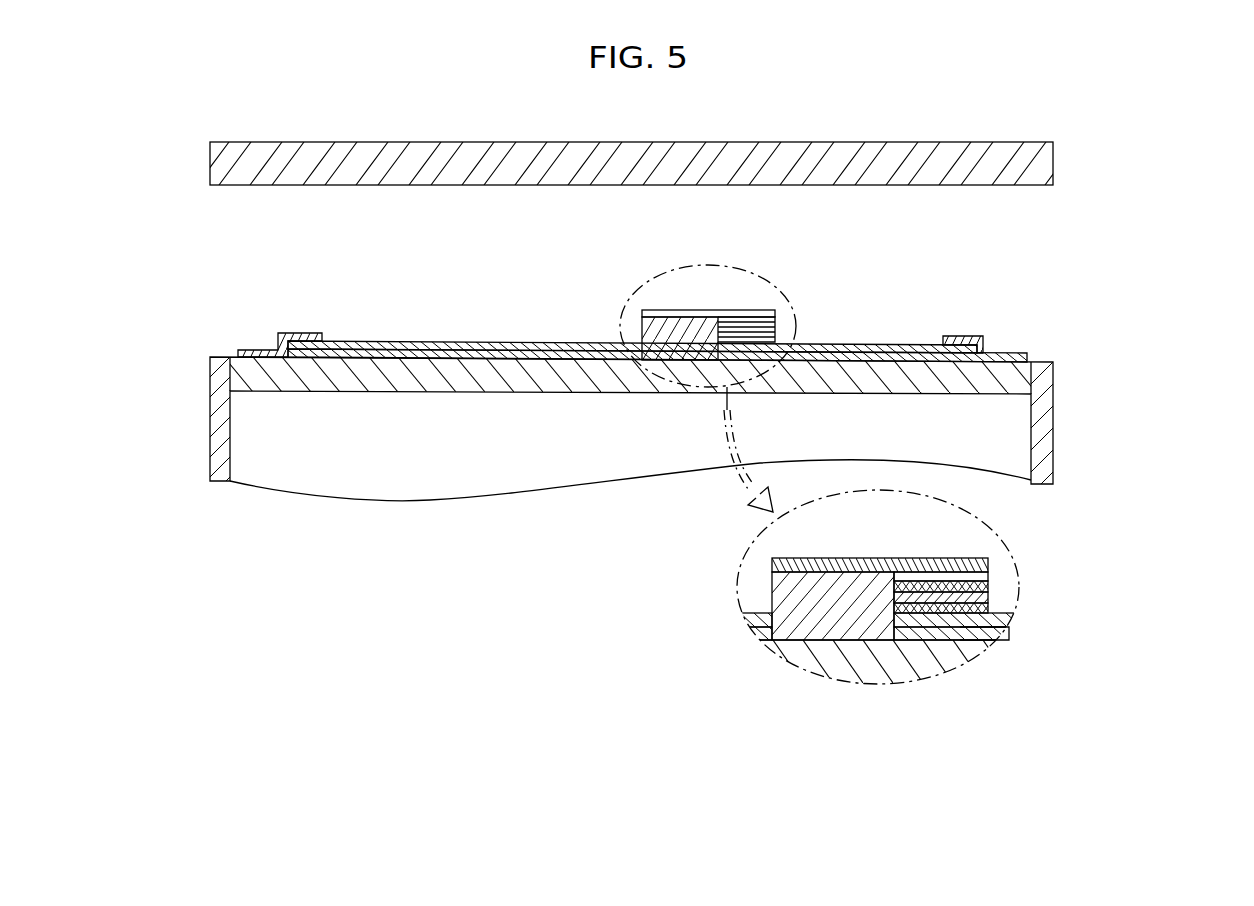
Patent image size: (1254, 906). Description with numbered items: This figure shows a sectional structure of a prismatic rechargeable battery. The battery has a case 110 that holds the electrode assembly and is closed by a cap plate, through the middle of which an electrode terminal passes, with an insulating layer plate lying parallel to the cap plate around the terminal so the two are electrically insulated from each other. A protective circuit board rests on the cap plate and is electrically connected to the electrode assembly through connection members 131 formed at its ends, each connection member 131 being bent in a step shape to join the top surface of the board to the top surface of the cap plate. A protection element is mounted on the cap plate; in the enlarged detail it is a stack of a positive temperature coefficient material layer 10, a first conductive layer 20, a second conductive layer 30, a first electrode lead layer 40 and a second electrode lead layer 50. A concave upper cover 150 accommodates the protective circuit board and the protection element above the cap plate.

The positive temperature coefficient material layer 10 is at (988, 596).
The first conductive layer 20 is at (986, 621).
The second conductive layer 30 is at (988, 578).
The first electrode lead layer 40 is at (968, 642).
The second electrode lead layer 50 is at (988, 561).
The case 110 is at (1045, 424).
The connection member 131 is at (248, 348).
The upper cover 150 is at (1055, 163).